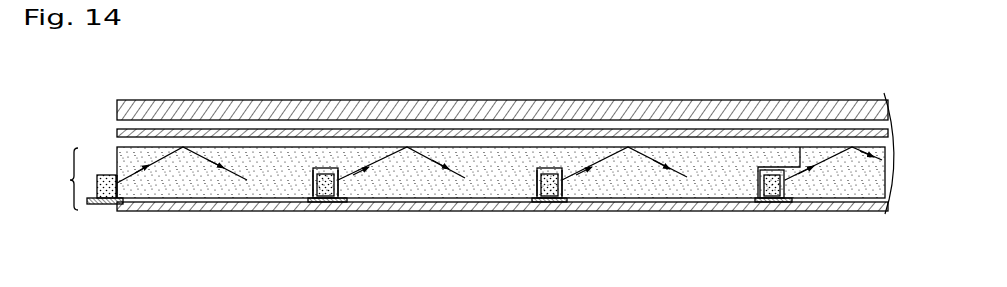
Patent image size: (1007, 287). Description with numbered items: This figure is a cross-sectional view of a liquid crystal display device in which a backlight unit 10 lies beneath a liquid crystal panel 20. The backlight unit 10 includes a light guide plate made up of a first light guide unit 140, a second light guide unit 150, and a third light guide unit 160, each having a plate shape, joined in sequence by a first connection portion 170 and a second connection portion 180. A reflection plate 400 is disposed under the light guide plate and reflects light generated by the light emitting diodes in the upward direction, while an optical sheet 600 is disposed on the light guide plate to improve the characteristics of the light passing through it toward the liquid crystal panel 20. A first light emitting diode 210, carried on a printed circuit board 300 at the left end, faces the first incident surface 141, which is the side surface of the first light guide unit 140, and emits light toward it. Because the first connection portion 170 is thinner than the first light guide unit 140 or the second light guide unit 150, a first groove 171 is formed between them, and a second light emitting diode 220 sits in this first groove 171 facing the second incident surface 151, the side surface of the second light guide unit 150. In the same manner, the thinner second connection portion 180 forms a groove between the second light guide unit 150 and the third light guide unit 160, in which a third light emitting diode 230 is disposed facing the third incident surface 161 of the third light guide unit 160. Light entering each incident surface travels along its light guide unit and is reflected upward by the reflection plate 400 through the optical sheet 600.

The backlight unit 10 is at (61, 179).
The liquid crystal panel 20 is at (145, 108).
The first light guide unit 140 is at (220, 182).
The first incident surface 141 is at (118, 190).
The second light guide unit 150 is at (440, 180).
The second incident surface 151 is at (340, 190).
The third light guide unit 160 is at (667, 180).
The third incident surface 161 is at (535, 183).
The first connection portion 170 is at (328, 158).
The first groove 171 is at (311, 183).
The second connection portion 180 is at (548, 158).
The first light emitting diode 210 is at (103, 175).
The second light emitting diode 220 is at (328, 201).
The third light emitting diode 230 is at (550, 201).
The printed circuit board 300 is at (100, 206).
The reflection plate 400 is at (193, 208).
The optical sheet 600 is at (227, 133).